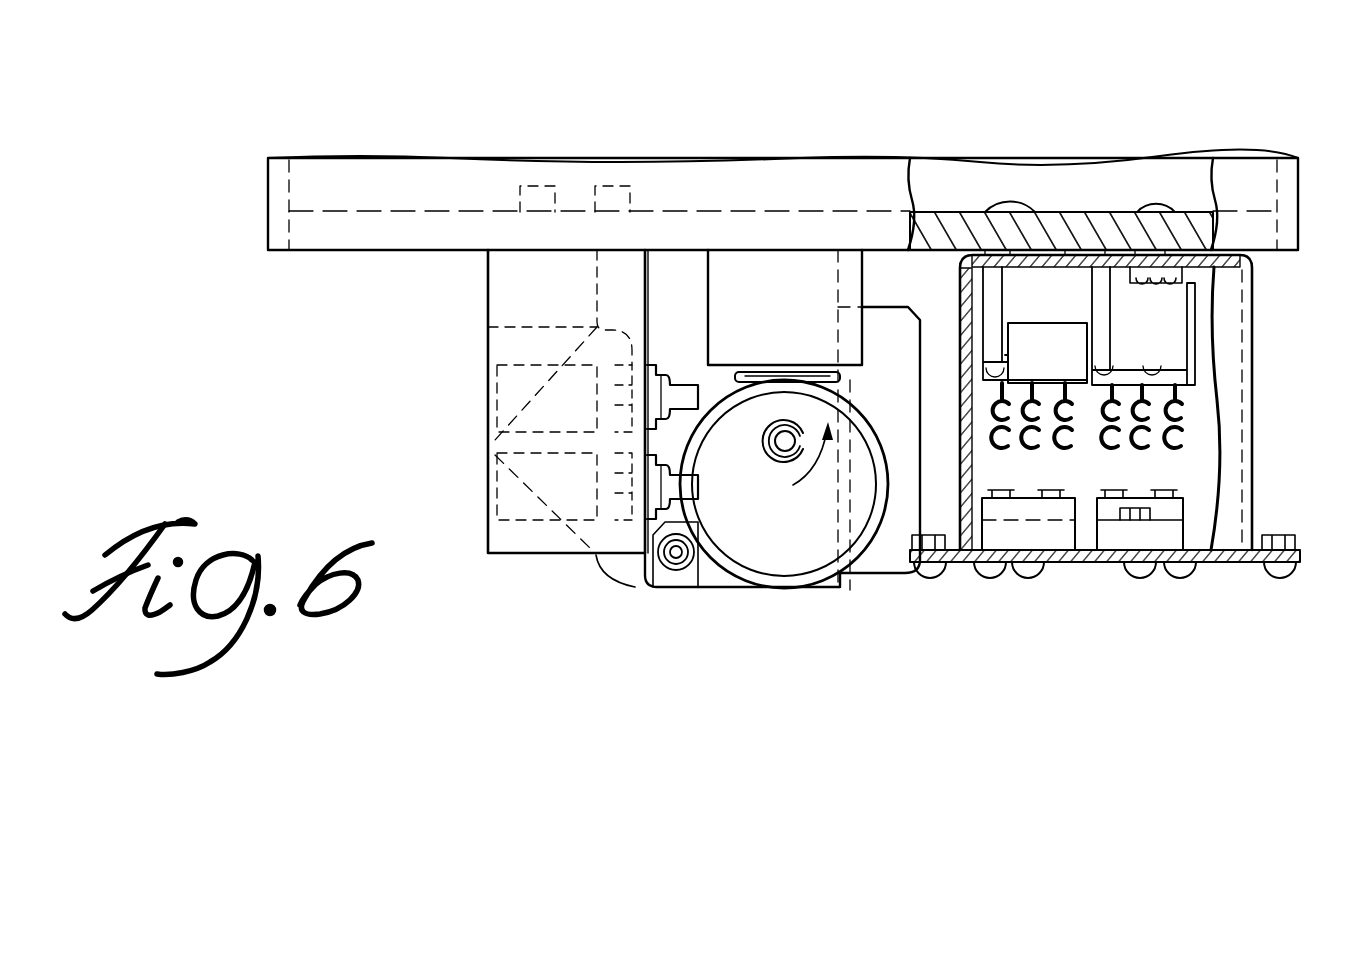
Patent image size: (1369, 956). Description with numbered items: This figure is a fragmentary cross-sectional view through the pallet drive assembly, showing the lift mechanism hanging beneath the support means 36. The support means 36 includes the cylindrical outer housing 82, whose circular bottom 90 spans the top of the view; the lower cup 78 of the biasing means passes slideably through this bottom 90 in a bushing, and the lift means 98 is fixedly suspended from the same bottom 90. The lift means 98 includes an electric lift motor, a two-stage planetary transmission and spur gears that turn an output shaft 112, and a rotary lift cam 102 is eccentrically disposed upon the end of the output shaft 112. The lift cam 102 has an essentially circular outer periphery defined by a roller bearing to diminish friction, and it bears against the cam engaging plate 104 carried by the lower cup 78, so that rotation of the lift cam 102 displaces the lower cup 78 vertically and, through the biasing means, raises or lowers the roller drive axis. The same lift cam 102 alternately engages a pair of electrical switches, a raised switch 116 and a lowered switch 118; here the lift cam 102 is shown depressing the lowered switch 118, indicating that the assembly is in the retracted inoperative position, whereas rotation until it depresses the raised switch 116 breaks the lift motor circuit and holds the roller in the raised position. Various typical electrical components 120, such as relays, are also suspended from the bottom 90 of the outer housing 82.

The support means 36 is at (268, 160).
The outer housing 82 is at (268, 213).
The circular bottom 90 is at (377, 252).
The lower cup 78 is at (732, 262).
The cam engaging plate 104 is at (795, 370).
The raised switch 116 is at (693, 393).
The output shaft 112 is at (778, 452).
The lowered switch 118 is at (682, 503).
The lift means 98 is at (738, 588).
The lift cam 102 is at (810, 570).
The electrical components 120 is at (1183, 502).